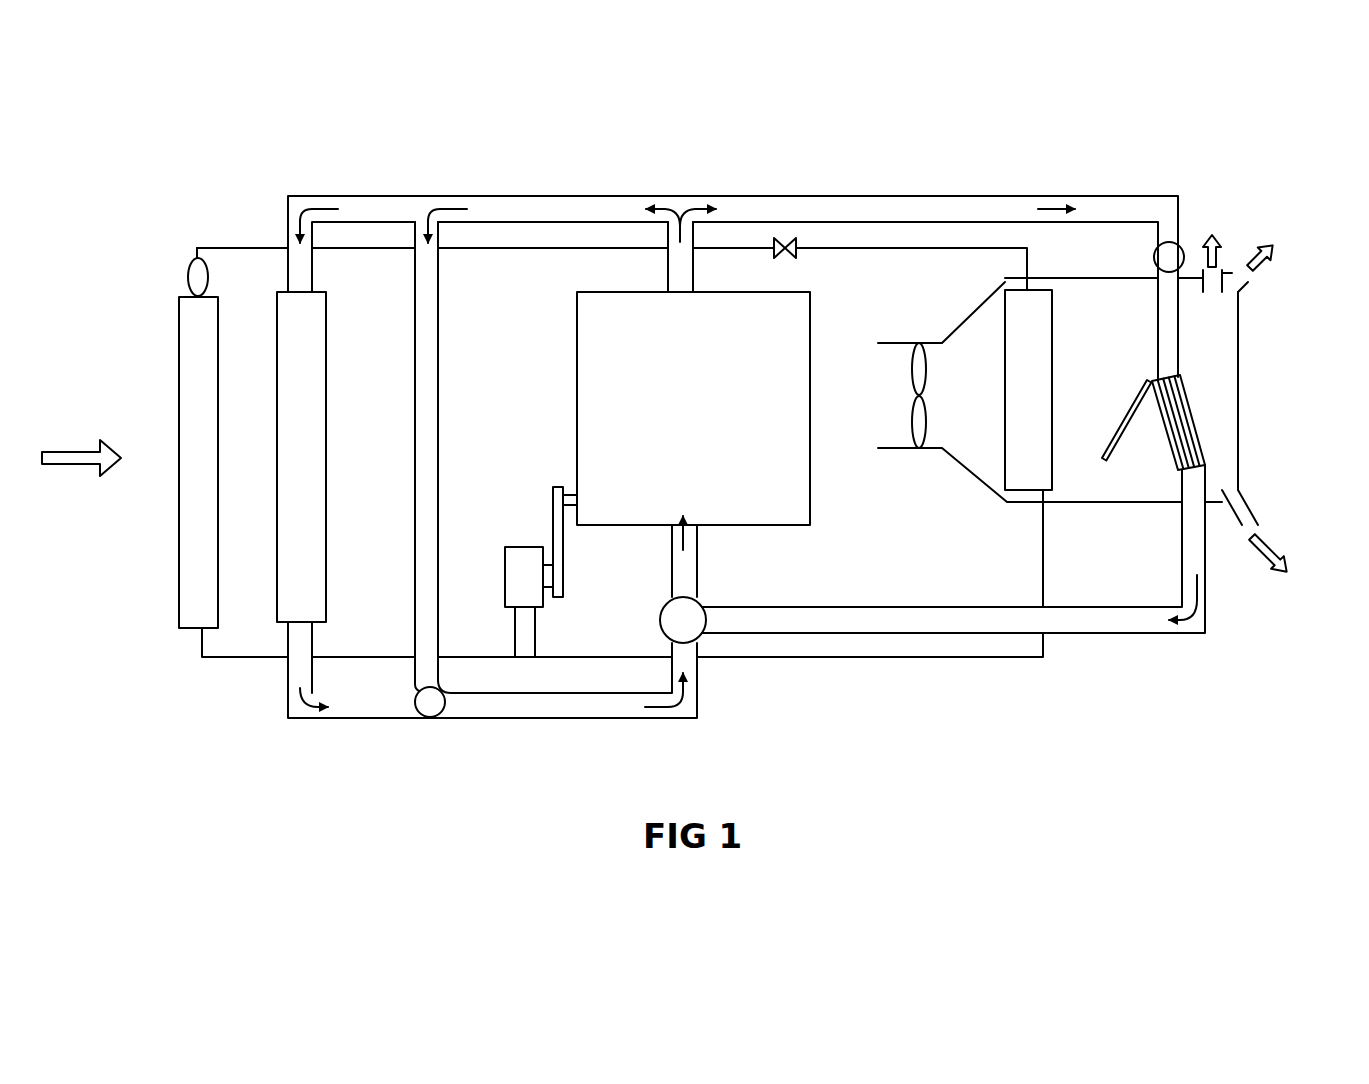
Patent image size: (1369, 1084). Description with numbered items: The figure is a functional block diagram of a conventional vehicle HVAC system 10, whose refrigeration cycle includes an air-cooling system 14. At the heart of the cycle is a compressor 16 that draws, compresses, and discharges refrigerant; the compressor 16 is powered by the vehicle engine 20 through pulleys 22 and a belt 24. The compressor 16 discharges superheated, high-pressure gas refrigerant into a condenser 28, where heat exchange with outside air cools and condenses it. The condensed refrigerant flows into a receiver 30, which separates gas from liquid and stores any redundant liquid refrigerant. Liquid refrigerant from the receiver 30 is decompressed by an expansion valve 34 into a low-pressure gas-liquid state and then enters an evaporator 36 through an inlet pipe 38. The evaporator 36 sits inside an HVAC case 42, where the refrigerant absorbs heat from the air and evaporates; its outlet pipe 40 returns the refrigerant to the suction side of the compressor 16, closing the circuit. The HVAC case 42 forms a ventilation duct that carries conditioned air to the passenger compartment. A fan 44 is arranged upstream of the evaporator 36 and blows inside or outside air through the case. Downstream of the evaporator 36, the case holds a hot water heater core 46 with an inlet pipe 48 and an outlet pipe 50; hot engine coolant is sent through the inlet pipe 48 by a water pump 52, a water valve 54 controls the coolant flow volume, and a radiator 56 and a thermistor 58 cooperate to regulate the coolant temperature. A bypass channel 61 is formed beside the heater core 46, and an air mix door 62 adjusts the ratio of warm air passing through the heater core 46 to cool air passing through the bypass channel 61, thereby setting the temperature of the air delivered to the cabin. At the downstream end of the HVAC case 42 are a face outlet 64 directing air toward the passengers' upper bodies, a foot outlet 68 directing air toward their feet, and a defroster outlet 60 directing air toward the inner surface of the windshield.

The vehicle HVAC system 10 is at (957, 150).
The air-cooling system 14 is at (176, 241).
The compressor 16 is at (525, 555).
The vehicle engine 20 is at (693, 408).
The pulleys 22 is at (548, 587).
The belt 24 is at (558, 537).
The condenser 28 is at (190, 362).
The receiver 30 is at (193, 273).
The expansion valve 34 is at (790, 250).
The evaporator 36 is at (1042, 320).
The inlet pipe 38 is at (1022, 257).
The outlet pipe 40 is at (1043, 535).
The HVAC case 42 is at (975, 478).
The fan 44 is at (912, 376).
The hot water heater core 46 is at (1182, 412).
The inlet pipe 48 is at (1170, 360).
The outlet pipe 50 is at (1190, 540).
The water pump 52 is at (683, 620).
The water valve 54 is at (1165, 258).
The radiator 56 is at (317, 368).
The thermistor 58 is at (430, 705).
The defroster outlet 60 is at (1222, 278).
The bypass channel 61 is at (1208, 337).
The air mix door 62 is at (1125, 415).
The face outlet 64 is at (1248, 282).
The foot outlet 68 is at (1257, 517).